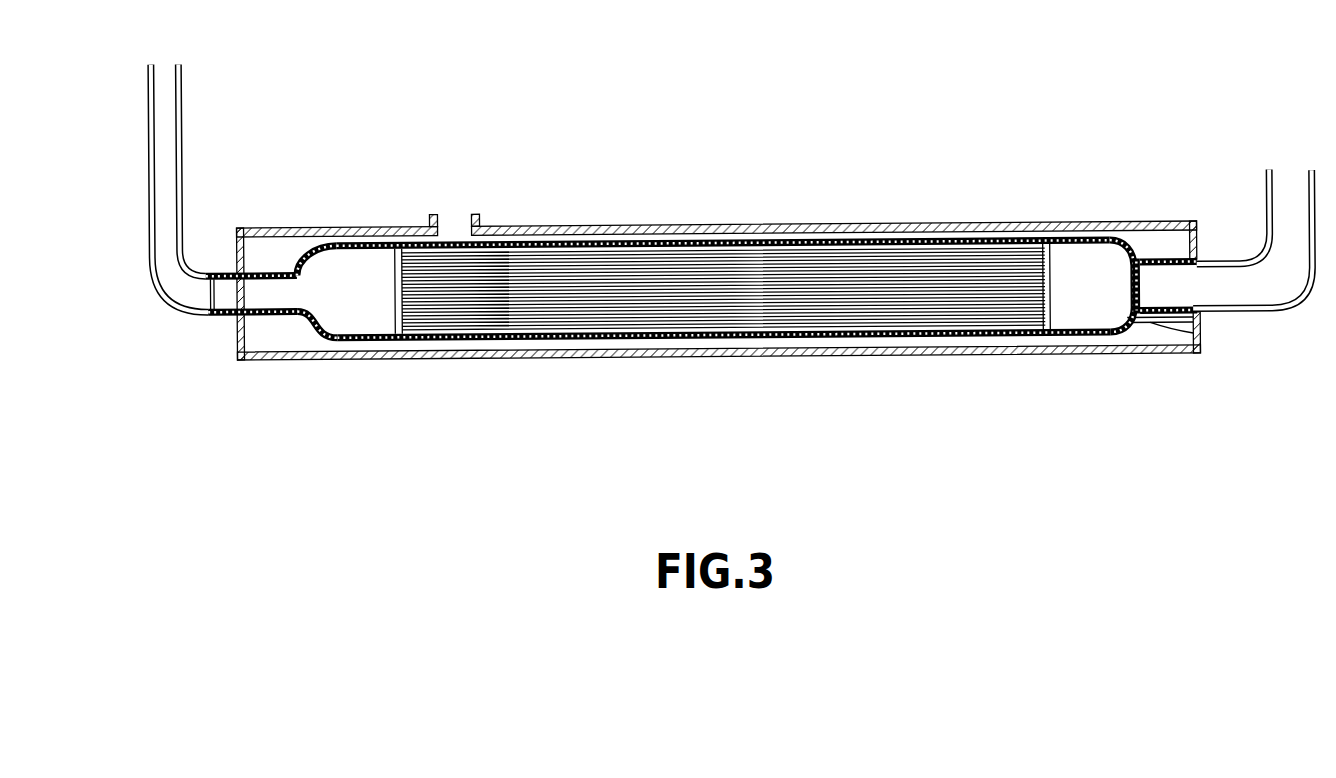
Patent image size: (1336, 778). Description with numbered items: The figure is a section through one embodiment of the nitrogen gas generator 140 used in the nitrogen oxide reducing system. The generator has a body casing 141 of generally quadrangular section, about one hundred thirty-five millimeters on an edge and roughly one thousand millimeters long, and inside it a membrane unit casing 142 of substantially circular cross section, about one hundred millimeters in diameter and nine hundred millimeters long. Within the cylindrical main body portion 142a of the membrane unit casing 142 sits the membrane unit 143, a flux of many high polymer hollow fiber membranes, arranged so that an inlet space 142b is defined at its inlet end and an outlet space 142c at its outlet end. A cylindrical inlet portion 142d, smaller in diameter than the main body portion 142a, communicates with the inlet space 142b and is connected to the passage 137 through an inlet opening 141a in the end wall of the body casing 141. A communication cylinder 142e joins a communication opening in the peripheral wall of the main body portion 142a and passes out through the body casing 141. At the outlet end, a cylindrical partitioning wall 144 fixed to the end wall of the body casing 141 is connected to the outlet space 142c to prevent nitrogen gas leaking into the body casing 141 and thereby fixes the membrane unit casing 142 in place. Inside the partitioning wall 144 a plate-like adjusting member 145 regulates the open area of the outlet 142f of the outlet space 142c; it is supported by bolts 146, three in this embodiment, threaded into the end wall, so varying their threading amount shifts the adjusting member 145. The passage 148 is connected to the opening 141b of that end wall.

The passage 137 is at (149, 180).
The nitrogen gas generator 140 is at (716, 200).
The body casing 141 is at (530, 228).
The inlet opening 141a is at (221, 272).
The opening 141b is at (1213, 270).
The membrane unit casing 142 is at (597, 343).
The cylindrical main body portion 142a is at (630, 244).
The inlet space 142b is at (353, 291).
The outlet space 142c is at (1088, 255).
The cylindrical inlet portion 142d is at (220, 318).
The communication cylinder 142e is at (471, 233).
The outlet 142f is at (1132, 271).
The membrane unit 143 is at (703, 310).
The cylindrical partitioning wall 144 is at (1160, 253).
The adjusting member 145 is at (1131, 333).
The bolts 146 is at (1201, 356).
The passage 148 is at (1287, 320).